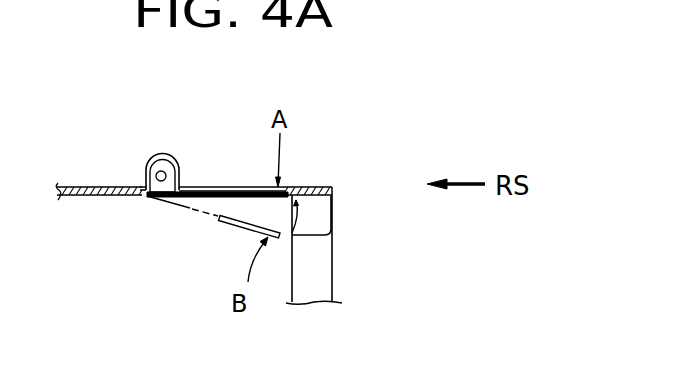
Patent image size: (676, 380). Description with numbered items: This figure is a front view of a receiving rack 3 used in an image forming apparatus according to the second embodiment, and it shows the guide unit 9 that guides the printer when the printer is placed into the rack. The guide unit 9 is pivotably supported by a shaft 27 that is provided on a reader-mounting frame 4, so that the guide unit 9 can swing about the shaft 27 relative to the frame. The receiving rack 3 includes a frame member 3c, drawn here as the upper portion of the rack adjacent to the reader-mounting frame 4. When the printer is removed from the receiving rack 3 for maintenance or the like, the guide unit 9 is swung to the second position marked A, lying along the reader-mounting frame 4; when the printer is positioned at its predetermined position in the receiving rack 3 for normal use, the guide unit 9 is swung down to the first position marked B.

The reader-mounting frame 4 is at (87, 188).
The shaft 27 is at (150, 158).
The guide unit 9 is at (233, 200).
The receiving rack 3 is at (327, 258).
The frame member 3c is at (327, 215).